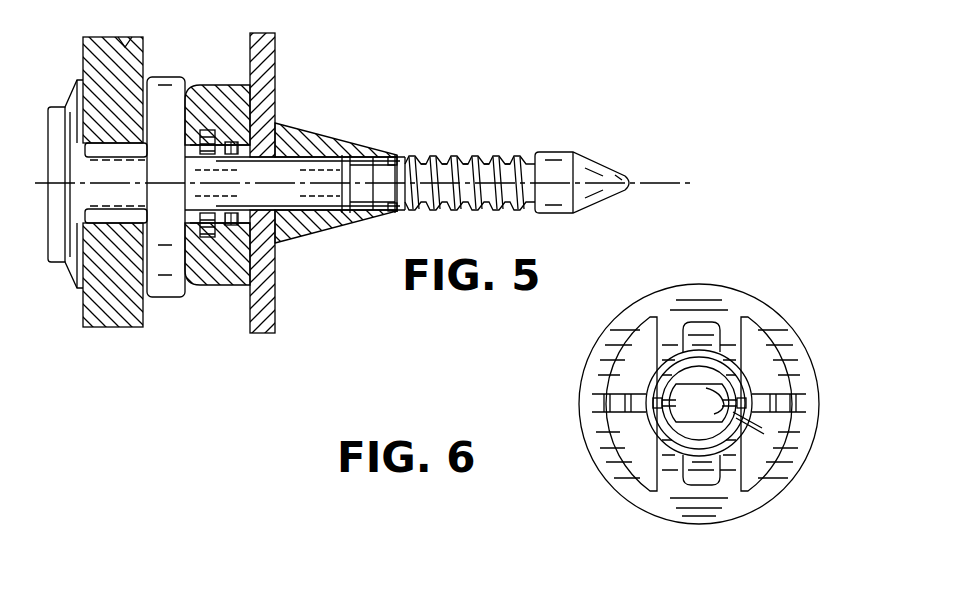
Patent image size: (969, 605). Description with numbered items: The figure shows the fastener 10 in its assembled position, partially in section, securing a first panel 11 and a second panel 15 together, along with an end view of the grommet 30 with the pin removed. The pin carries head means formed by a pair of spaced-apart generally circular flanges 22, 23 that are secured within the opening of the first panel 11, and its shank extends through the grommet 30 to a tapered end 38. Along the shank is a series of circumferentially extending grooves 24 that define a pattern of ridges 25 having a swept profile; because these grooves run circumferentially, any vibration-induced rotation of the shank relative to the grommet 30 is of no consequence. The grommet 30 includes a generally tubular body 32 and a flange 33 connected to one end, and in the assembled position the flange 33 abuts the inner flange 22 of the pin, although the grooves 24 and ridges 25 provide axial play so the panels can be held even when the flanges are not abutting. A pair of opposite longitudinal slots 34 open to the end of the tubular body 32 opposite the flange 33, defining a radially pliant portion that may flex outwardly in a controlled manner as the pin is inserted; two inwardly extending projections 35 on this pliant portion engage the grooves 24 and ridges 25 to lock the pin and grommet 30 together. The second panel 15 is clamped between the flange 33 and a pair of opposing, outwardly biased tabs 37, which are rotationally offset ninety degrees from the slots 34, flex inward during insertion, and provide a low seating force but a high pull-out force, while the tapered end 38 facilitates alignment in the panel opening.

In FIG. 5, the fastener 10 is at (473, 58).
In FIG. 5, the first panel 11 is at (125, 40).
In FIG. 5, the second panel 15 is at (258, 35).
In FIG. 5, the inner flange 22 is at (163, 77).
In FIG. 5, the outer flange 23 is at (75, 100).
In FIG. 5, the grooves 24 is at (461, 152).
In FIG. 5, the ridges 25 is at (517, 152).
In FIG. 6, the grommet 30 is at (754, 280).
In FIG. 5, the tubular body 32 is at (347, 128).
In FIG. 6, the tubular body 32 is at (648, 441).
In FIG. 5, the flange 33 is at (205, 88).
In FIG. 6, the flange 33 is at (798, 362).
In FIG. 5, the longitudinal slots 34 is at (428, 200).
In FIG. 6, the longitudinal slots 34 is at (656, 399).
In FIG. 5, the inwardly extending projections 35 is at (393, 157).
In FIG. 6, the inwardly extending projections 35 is at (722, 408).
In FIG. 5, the tabs 37 is at (290, 123).
In FIG. 5, the tapered end 38 is at (610, 170).